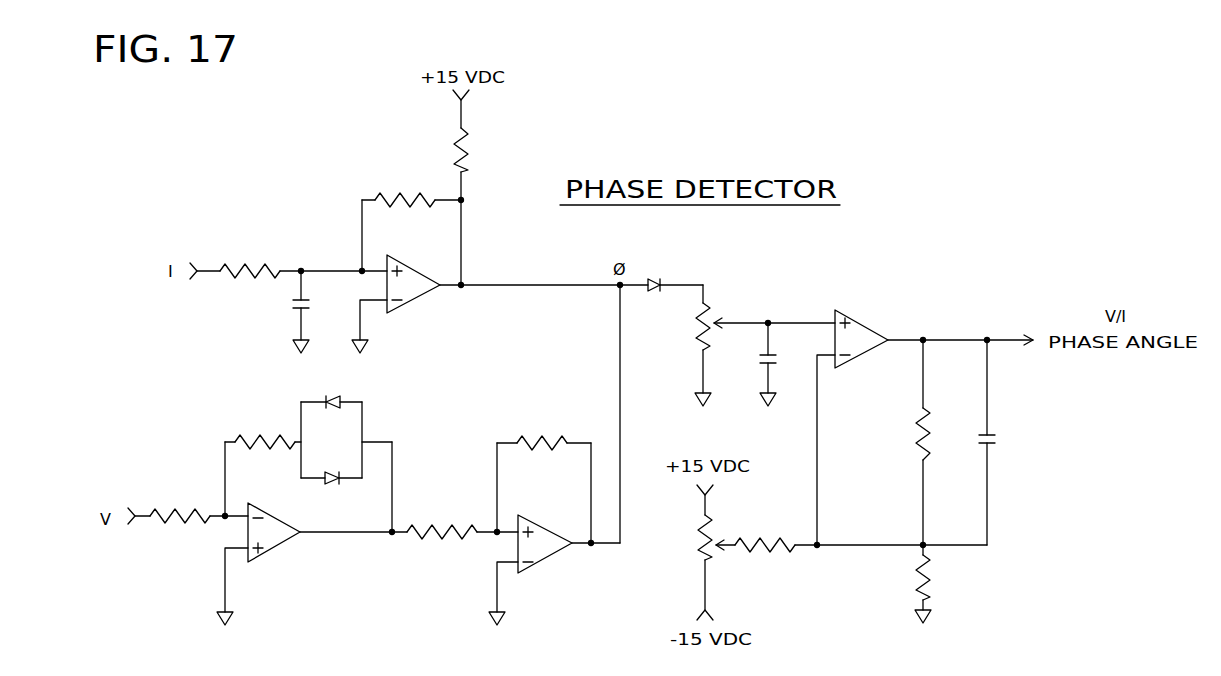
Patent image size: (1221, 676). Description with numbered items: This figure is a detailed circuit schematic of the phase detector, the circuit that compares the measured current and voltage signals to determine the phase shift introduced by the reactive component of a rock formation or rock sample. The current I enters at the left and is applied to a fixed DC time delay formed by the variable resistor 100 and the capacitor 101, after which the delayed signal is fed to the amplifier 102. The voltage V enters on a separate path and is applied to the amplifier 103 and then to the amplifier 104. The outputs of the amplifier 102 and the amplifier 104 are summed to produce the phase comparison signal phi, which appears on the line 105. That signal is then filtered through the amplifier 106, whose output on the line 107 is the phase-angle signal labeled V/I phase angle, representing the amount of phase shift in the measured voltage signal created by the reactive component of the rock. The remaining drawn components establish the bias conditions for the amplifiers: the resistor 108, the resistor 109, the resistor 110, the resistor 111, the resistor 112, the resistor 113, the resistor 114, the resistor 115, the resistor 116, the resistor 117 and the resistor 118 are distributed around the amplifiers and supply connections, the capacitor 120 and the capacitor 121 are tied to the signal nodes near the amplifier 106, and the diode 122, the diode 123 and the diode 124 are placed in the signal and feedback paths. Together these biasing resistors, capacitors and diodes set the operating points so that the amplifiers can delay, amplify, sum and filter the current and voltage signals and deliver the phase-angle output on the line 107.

The variable resistor 100 is at (260, 264).
The capacitor 101 is at (298, 310).
The amplifier 102 is at (405, 305).
The amplifier 103 is at (270, 553).
The amplifier 104 is at (548, 555).
The line 105 is at (478, 284).
The amplifier 106 is at (858, 316).
The line 107 is at (996, 337).
The resistor 108 is at (428, 203).
The resistor 109 is at (465, 172).
The resistor 110 is at (184, 520).
The resistor 111 is at (258, 437).
The resistor 112 is at (449, 526).
The resistor 113 is at (537, 441).
The resistor 114 is at (708, 312).
The resistor 115 is at (785, 550).
The resistor 116 is at (711, 523).
The resistor 117 is at (916, 428).
The resistor 118 is at (932, 581).
The capacitor 120 is at (765, 365).
The capacitor 121 is at (990, 444).
The diode 122 is at (662, 284).
The diode 123 is at (340, 399).
The diode 124 is at (337, 484).